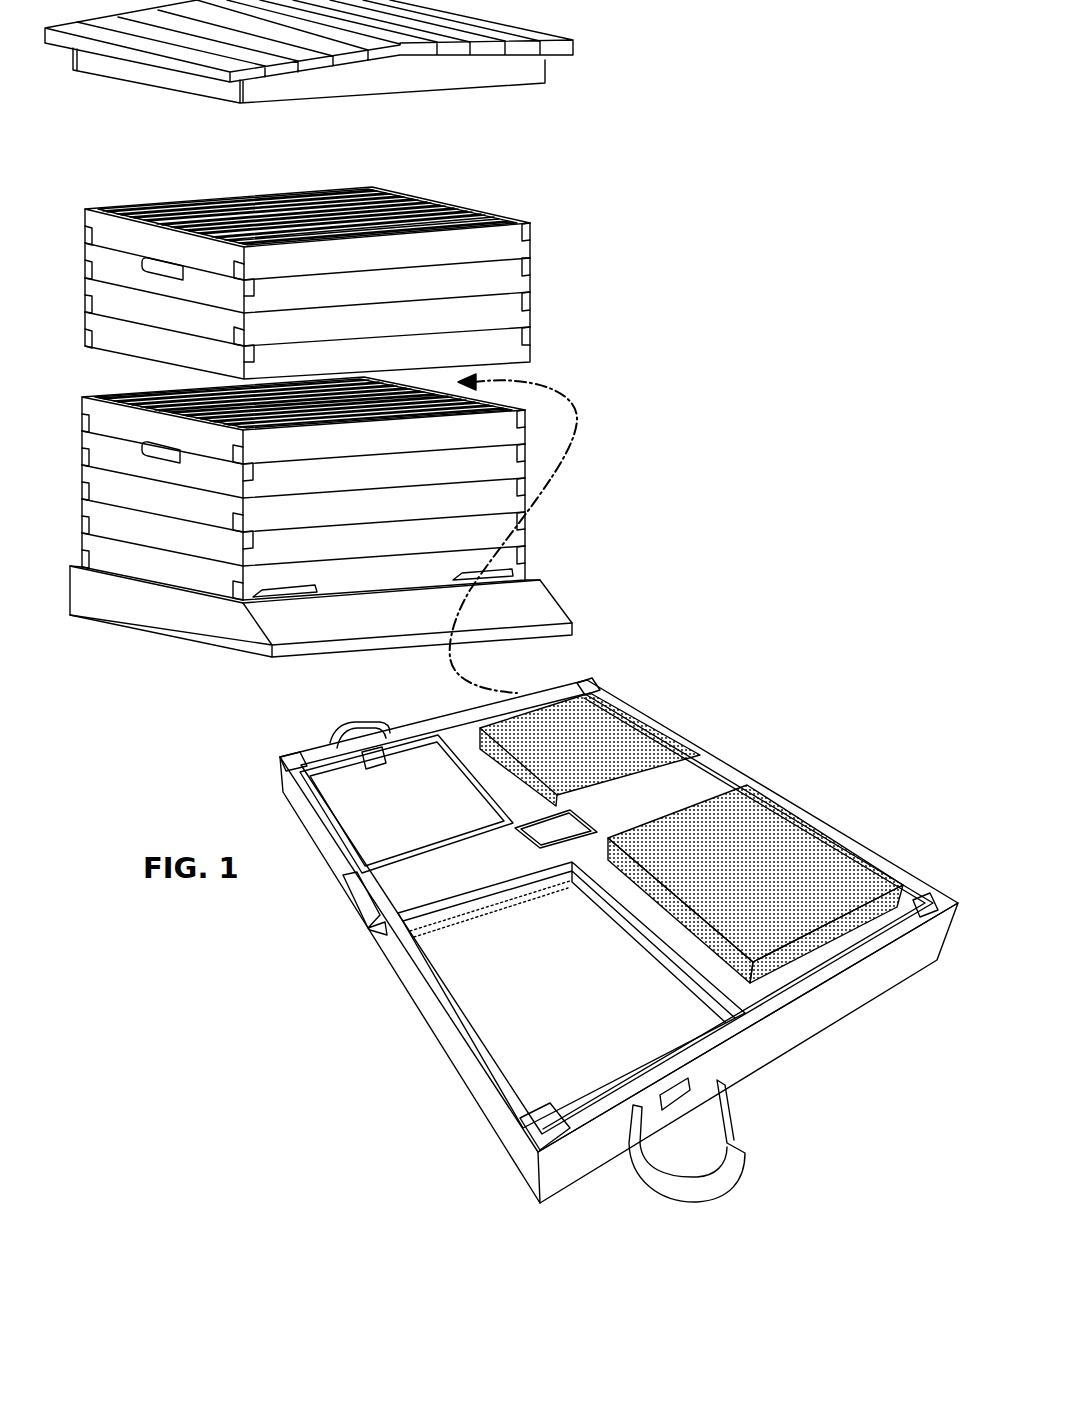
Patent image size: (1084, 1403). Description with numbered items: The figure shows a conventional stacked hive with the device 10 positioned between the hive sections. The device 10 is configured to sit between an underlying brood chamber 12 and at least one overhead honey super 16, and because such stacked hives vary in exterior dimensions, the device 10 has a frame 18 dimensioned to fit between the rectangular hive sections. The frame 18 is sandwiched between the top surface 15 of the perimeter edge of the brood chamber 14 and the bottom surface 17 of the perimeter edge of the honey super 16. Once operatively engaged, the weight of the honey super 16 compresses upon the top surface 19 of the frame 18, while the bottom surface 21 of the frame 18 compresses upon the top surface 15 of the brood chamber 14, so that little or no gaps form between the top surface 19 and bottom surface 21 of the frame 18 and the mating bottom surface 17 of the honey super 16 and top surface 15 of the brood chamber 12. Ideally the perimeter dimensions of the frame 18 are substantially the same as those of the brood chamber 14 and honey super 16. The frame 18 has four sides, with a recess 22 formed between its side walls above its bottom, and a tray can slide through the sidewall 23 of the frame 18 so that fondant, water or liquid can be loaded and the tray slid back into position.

The device 10 is at (619, 918).
The brood chamber 12 is at (403, 358).
The brood chamber 14 is at (187, 508).
The top surface 15 is at (100, 398).
The honey super 16 is at (498, 285).
The bottom surface 17 is at (332, 449).
The frame 18 is at (587, 680).
The top surface 19 is at (918, 884).
The bottom surface 21 is at (597, 1173).
The recess 22 is at (744, 1000).
The sidewall 23 is at (827, 1005).